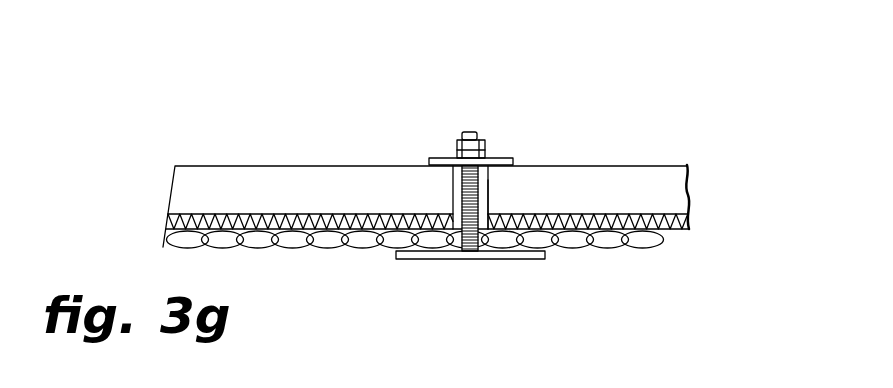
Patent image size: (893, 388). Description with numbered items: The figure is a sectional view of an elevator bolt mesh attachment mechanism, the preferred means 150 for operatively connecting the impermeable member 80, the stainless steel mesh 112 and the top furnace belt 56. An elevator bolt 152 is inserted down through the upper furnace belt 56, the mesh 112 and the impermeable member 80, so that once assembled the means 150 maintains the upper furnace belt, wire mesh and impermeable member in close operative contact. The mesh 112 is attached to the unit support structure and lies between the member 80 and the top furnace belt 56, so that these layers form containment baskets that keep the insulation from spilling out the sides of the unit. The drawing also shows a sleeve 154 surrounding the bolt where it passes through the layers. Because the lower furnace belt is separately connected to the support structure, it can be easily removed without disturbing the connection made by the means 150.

The means for operatively connecting 150 is at (453, 132).
The sleeve 154 is at (452, 188).
The elevator bolt 152 is at (490, 192).
The impermeable member 80 is at (323, 177).
The stainless steel mesh 112 is at (689, 220).
The top furnace belt 56 is at (605, 242).